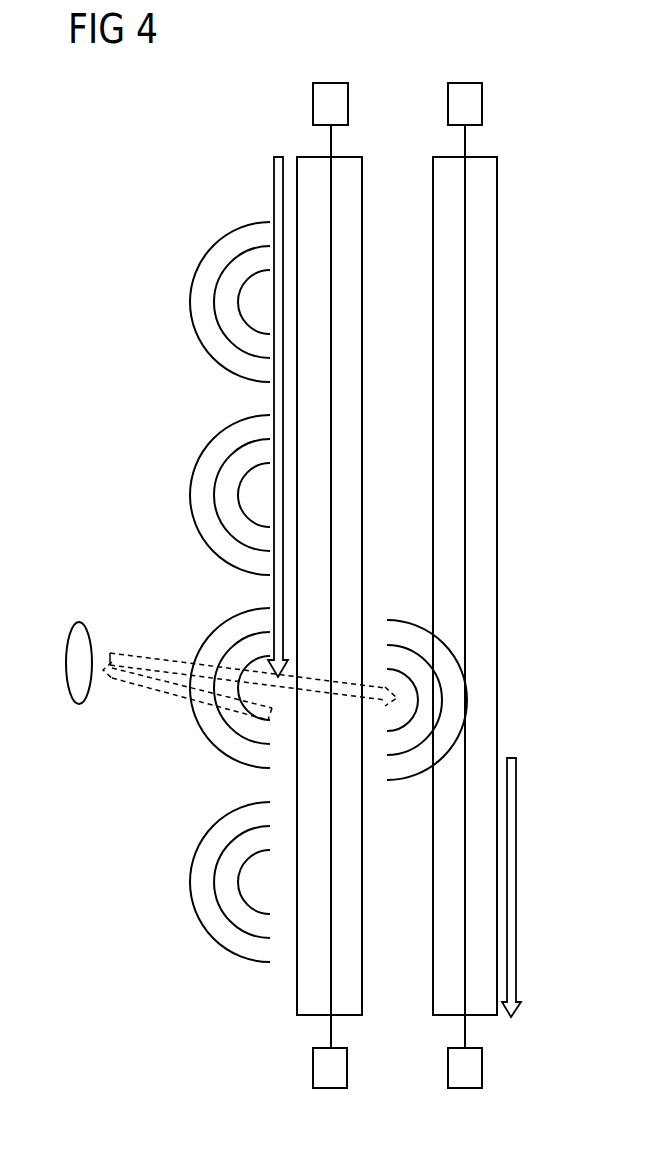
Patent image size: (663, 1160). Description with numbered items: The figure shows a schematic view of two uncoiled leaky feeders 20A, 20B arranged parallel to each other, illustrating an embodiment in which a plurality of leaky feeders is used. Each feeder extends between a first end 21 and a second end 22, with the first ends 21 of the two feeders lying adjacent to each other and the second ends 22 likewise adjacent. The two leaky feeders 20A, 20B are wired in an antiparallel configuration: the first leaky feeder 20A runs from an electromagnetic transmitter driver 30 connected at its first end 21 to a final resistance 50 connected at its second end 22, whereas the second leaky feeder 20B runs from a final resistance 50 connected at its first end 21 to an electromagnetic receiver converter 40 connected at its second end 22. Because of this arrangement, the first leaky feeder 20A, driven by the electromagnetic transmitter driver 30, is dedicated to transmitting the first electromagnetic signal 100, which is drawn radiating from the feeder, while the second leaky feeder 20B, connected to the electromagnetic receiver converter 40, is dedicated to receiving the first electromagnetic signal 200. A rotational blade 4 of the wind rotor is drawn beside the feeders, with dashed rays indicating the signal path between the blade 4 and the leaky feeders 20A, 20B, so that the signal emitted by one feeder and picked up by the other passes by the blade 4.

The rotational blade 4 is at (81, 622).
The first leaky feeder 20A is at (331, 237).
The second leaky feeder 20B is at (465, 235).
The first end 21 is at (465, 143).
The second end 22 is at (465, 1038).
The electromagnetic transmitter driver 30 is at (330, 83).
The electromagnetic receiver converter 40 is at (482, 1070).
The final resistance 50 is at (465, 83).
The first electromagnetic signal 100 is at (236, 232).
The first electromagnetic signal (received) 200 is at (389, 620).